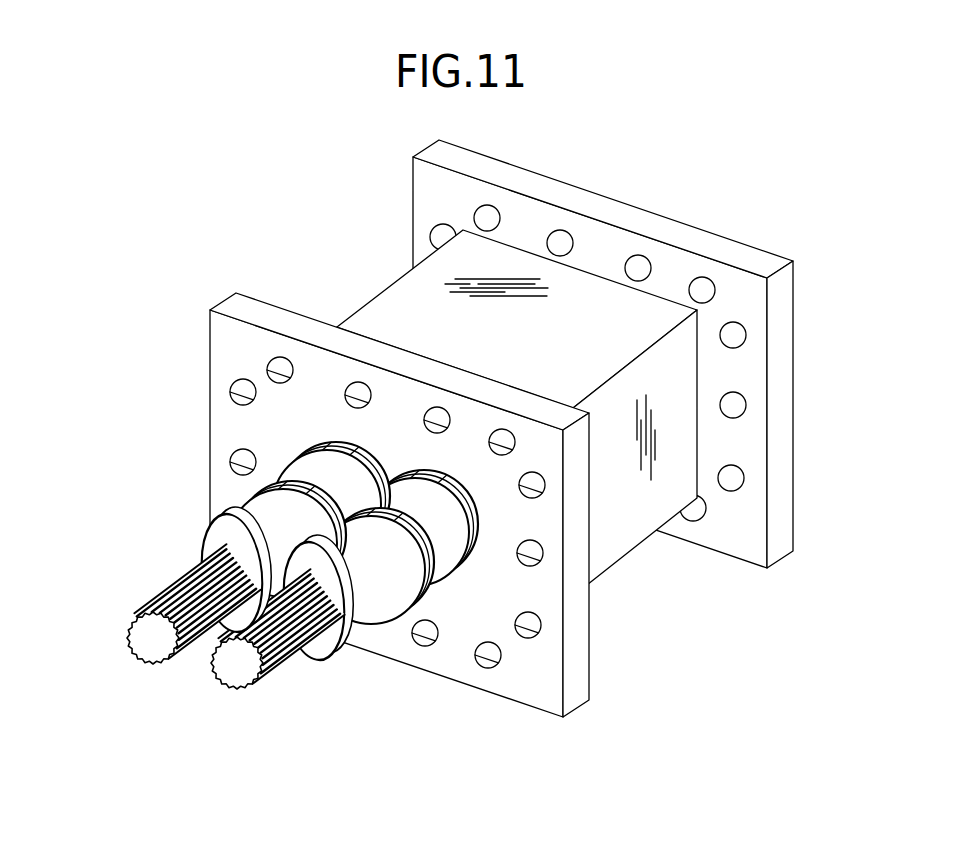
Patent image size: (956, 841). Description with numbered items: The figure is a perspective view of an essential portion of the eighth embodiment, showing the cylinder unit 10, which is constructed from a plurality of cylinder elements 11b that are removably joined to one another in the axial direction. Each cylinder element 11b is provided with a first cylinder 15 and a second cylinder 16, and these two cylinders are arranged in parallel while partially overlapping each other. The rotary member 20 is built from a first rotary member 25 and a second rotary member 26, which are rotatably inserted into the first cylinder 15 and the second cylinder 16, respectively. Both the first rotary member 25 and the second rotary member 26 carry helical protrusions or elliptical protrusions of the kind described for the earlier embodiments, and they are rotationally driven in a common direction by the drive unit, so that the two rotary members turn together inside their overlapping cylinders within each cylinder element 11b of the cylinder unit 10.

The cylinder unit 10 is at (322, 183).
The cylinder element 11b is at (636, 550).
The first cylinder 15 is at (454, 566).
The second cylinder 16 is at (318, 443).
The rotary member 20 is at (186, 672).
The first rotary member 25 is at (327, 674).
The second rotary member 26 is at (194, 544).